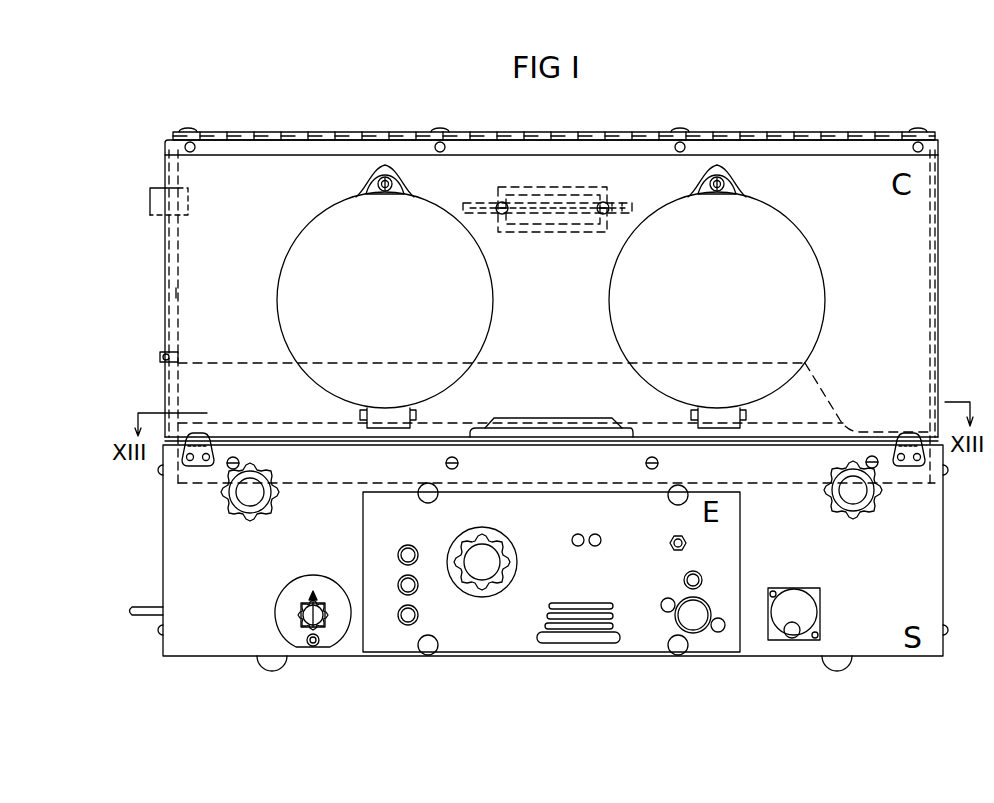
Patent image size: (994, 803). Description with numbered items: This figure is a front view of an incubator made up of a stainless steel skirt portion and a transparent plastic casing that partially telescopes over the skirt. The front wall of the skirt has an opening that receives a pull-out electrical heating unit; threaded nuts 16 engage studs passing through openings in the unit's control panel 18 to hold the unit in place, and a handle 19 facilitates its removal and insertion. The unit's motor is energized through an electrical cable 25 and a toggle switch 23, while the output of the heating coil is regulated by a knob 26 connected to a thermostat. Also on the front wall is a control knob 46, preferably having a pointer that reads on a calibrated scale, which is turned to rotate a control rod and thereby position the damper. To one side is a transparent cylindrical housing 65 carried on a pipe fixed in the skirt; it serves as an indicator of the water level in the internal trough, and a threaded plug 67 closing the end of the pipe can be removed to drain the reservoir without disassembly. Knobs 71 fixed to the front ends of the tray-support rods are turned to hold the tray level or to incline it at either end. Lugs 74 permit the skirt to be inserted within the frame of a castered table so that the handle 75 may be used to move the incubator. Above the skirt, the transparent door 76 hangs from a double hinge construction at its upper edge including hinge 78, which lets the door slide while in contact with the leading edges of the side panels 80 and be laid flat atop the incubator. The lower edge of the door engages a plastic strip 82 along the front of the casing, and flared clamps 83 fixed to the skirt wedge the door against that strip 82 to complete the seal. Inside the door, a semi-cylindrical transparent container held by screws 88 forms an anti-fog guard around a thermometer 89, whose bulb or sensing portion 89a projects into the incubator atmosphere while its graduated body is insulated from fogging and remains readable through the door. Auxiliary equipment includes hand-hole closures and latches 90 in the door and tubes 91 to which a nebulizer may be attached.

The threaded nuts 16 is at (436, 500).
The control panel 18 is at (740, 538).
The handle 19 is at (545, 638).
The toggle switch 23 is at (673, 537).
The electrical cable 25 is at (700, 606).
The knob 26 is at (494, 546).
The control knob 46 is at (305, 615).
The transparent cylindrical housing 65 is at (814, 610).
The threaded plug 67 is at (800, 630).
The knobs 71 is at (272, 513).
The lugs 74 is at (283, 668).
The handle 75 is at (135, 606).
The door 76 is at (227, 288).
The hinge 78 is at (740, 132).
The side panels 80 is at (178, 293).
The plastic strip 82 is at (477, 381).
The flared clamps 83 is at (205, 445).
The screws 88 is at (609, 206).
The thermometer 89 is at (522, 207).
The bulb or sensing portion 89a is at (482, 206).
The closures and latches 90 is at (551, 296).
The tubes 91 is at (158, 210).